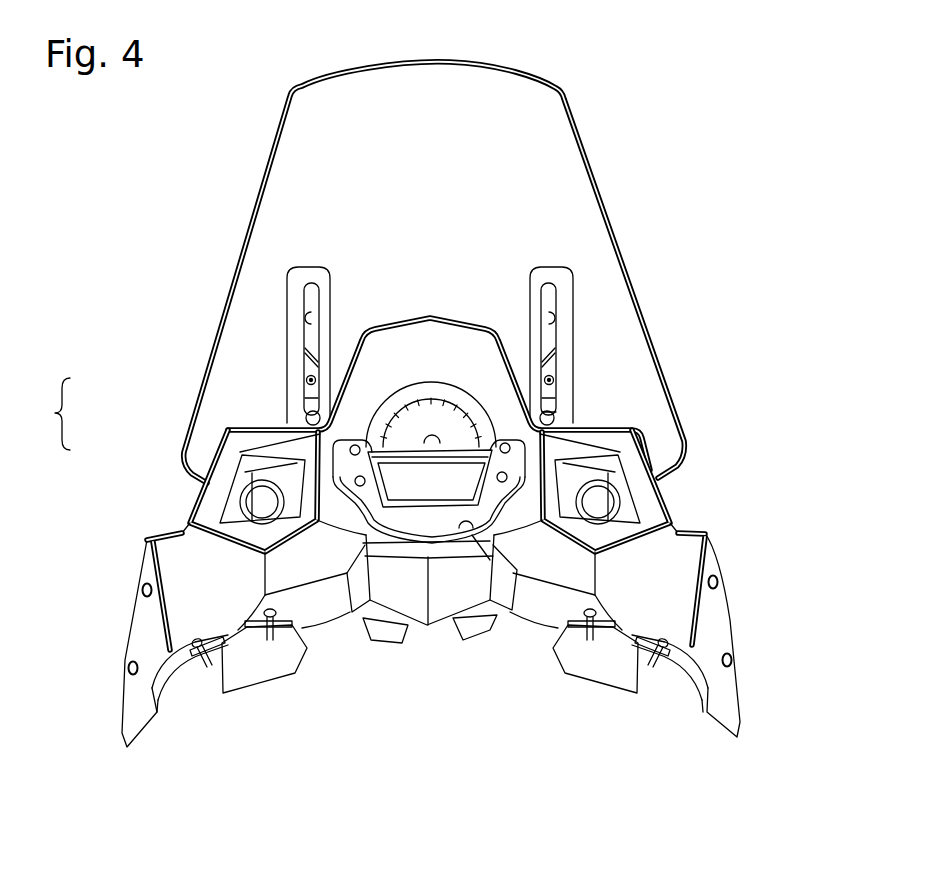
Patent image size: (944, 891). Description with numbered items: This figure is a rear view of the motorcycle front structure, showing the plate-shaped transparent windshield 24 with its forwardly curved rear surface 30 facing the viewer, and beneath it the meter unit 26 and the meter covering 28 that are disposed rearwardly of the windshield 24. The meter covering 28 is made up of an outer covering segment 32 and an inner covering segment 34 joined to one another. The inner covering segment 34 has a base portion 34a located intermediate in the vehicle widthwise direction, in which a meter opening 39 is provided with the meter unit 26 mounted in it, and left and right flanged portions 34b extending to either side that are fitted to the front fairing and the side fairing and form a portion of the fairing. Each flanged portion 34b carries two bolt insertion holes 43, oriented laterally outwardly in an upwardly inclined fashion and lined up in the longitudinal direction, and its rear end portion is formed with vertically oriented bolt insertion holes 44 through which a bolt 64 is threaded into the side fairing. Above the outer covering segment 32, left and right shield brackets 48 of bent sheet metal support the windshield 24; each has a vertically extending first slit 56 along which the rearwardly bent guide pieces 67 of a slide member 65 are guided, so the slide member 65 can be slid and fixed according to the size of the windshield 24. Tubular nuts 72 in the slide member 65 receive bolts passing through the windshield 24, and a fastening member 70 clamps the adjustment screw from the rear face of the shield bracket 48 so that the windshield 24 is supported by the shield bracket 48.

The windshield 24 is at (492, 97).
The rear surface 30 is at (552, 143).
The shield bracket 48 is at (295, 287).
The first slit 56 is at (307, 320).
The guide pieces 67 is at (308, 350).
The tubular nuts 72 is at (308, 380).
The slide member 65 is at (312, 402).
The fastening member 70 is at (560, 413).
The outer covering segment 32 is at (358, 388).
The meter covering 28 is at (44, 414).
The inner covering segment 34 is at (173, 547).
The base portion 34a is at (402, 582).
The flanged portions 34b is at (143, 560).
The bolt insertion holes 43 is at (145, 590).
The bolt insertion holes 44 is at (188, 650).
The bolt 64 is at (230, 672).
The meter unit 26 is at (428, 480).
The meter opening 39 is at (487, 557).